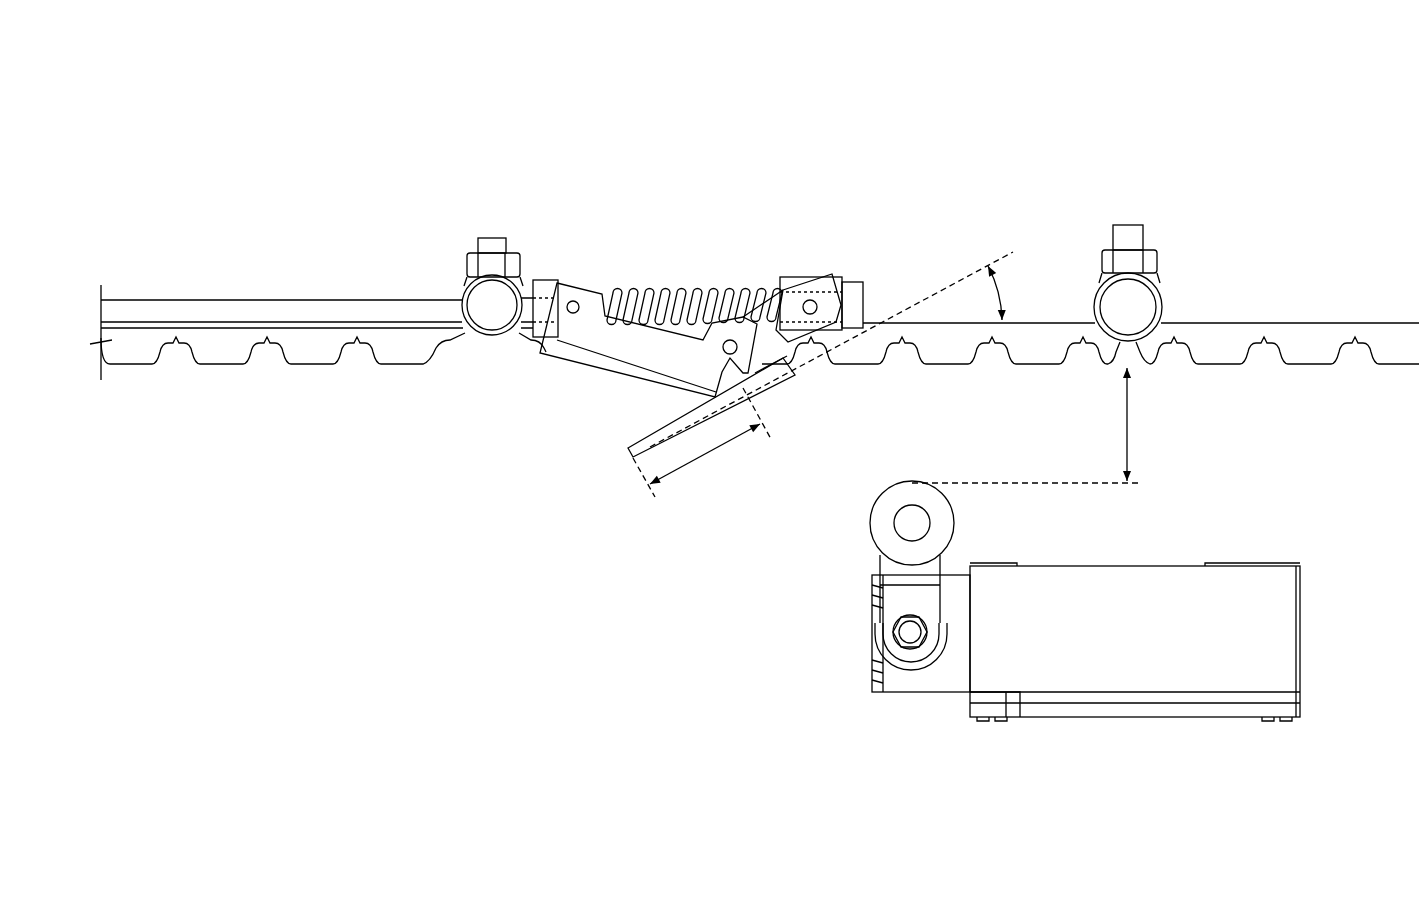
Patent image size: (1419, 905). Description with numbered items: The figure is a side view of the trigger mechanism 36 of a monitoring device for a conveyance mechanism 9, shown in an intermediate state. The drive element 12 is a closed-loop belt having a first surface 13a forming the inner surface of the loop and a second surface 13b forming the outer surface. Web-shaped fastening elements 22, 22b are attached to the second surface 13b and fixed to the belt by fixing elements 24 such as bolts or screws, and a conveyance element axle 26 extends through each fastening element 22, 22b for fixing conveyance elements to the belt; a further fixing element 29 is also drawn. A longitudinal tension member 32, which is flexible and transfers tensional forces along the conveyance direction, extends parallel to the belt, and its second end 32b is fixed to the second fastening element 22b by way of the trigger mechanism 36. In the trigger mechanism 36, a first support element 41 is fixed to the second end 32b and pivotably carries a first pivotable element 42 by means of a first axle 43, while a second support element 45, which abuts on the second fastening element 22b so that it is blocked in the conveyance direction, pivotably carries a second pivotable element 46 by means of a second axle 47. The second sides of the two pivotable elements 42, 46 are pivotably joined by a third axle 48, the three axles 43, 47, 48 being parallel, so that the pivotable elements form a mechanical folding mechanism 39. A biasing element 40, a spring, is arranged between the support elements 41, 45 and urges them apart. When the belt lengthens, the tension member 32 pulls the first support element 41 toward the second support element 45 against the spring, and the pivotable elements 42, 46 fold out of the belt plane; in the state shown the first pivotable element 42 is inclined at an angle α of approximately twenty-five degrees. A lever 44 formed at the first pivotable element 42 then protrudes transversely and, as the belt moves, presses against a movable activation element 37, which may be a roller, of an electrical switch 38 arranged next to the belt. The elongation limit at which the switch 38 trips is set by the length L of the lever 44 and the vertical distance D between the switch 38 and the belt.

The conveyance mechanism 9 is at (1127, 97).
The drive element 12 is at (292, 395).
The first surface 13a is at (373, 375).
The second surface 13b is at (372, 275).
The fastening element 22 is at (1170, 225).
The second fastening element 22b is at (525, 225).
The fixing element 24 is at (495, 245).
The conveyance element axle 26 is at (492, 325).
The fastener bolt 29 is at (1125, 233).
The longitudinal tension member 32 is at (300, 303).
The second end 32b is at (878, 265).
The trigger mechanism 36 is at (778, 185).
The movable activation element 37 is at (946, 523).
The electrical switch 38 is at (1302, 512).
The mechanism 39 is at (587, 452).
The biasing element 40 is at (710, 253).
The first support element 41 is at (837, 275).
The first pivotable element 42 is at (784, 384).
The first axle 43 is at (812, 300).
The lever 44 is at (688, 415).
The second support element 45 is at (550, 287).
The second pivotable element 46 is at (600, 355).
The second axle 47 is at (580, 303).
The third axle 48 is at (734, 340).